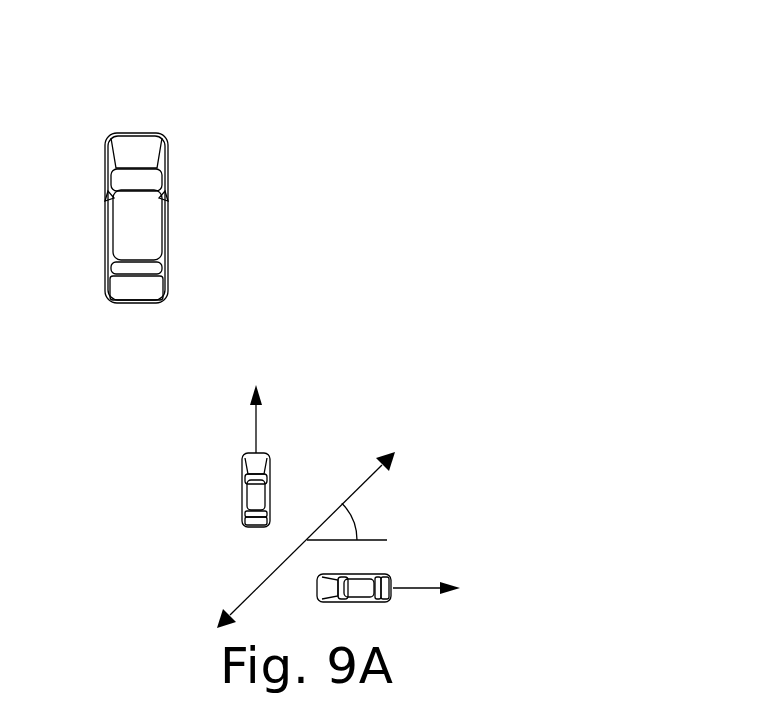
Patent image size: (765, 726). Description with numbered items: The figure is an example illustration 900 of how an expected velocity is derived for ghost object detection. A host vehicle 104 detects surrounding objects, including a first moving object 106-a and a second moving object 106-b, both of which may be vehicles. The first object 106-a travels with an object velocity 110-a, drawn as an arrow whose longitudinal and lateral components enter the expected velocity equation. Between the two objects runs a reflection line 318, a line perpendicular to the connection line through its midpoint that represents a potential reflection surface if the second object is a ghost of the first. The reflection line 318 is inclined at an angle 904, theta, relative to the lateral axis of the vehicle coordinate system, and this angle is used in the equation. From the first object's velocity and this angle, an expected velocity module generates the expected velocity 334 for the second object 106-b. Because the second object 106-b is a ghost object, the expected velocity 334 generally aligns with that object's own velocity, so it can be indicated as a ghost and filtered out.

The example illustration 900 is at (648, 41).
The host vehicle 104 is at (97, 206).
The object 106-a is at (208, 478).
The object velocity 110-a is at (204, 409).
The reflection line 318 is at (306, 515).
The angle 904 is at (373, 511).
The object 106-b is at (404, 570).
The expected velocity 334 is at (483, 578).